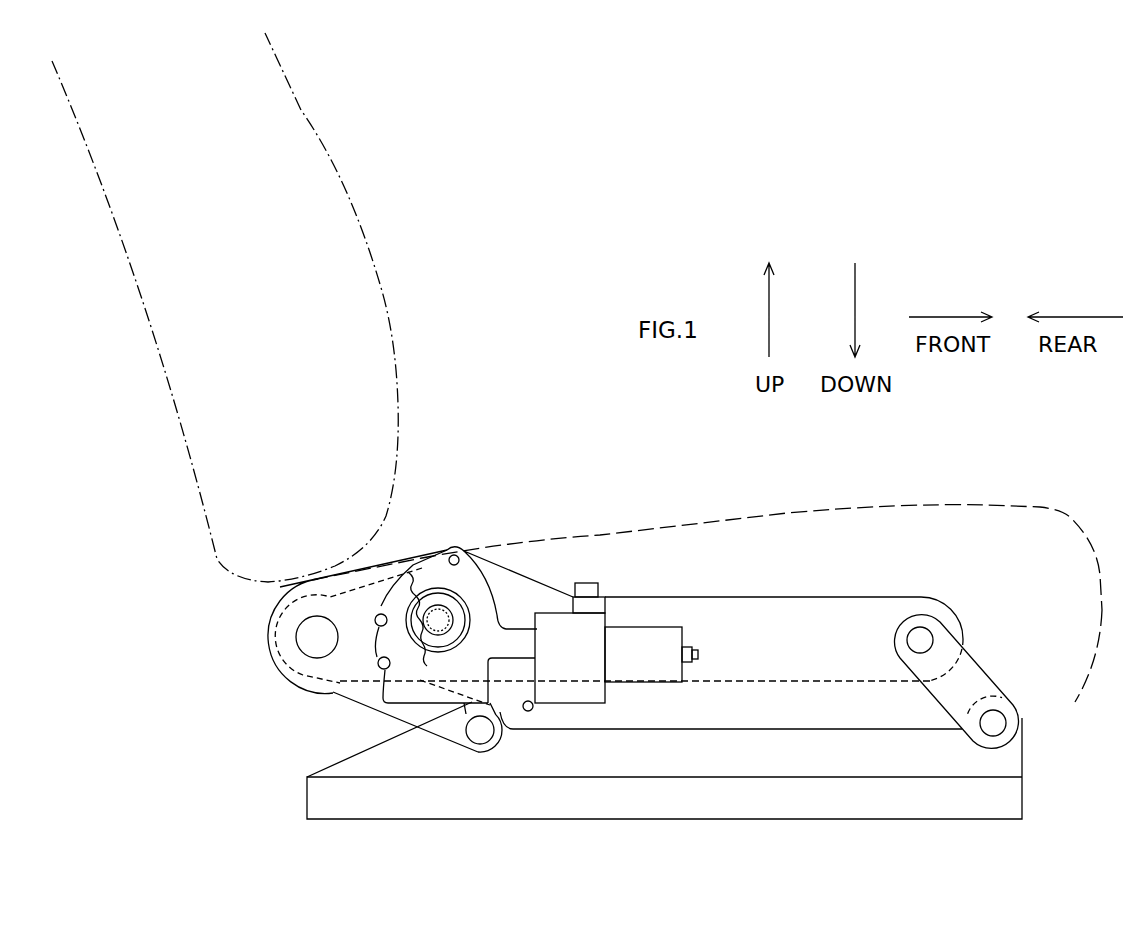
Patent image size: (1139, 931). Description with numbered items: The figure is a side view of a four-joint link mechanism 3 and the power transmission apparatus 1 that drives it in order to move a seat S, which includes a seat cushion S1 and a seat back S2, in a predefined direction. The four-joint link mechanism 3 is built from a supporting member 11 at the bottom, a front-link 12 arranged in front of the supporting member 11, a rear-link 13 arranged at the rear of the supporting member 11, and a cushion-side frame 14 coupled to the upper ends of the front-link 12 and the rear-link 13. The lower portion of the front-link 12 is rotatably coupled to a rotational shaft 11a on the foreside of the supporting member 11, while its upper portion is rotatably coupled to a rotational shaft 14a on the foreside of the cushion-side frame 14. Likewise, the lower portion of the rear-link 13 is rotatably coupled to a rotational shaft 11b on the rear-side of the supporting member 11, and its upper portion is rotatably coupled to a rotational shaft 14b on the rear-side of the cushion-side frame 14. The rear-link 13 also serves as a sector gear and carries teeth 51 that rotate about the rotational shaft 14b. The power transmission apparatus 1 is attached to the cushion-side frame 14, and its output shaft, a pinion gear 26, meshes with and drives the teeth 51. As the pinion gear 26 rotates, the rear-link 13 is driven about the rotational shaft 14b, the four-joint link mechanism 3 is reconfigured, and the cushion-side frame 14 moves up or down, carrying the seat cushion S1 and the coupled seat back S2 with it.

The power transmission apparatus 1 is at (512, 602).
The four-joint link mechanism 3 is at (701, 579).
The supporting member 11 is at (1002, 802).
The rotational shaft 11a is at (993, 723).
The rotational shaft 11b is at (478, 730).
The front-link 12 is at (960, 687).
The rear-link 13 is at (372, 692).
The cushion-side frame 14 is at (848, 610).
The rotational shaft 14a is at (920, 640).
The rotational shaft 14b is at (307, 645).
The pinion gear 26 is at (470, 610).
The teeth 51 is at (425, 552).
The seat S is at (894, 487).
The seat cushion S1 is at (1043, 503).
The seat back S2 is at (405, 363).